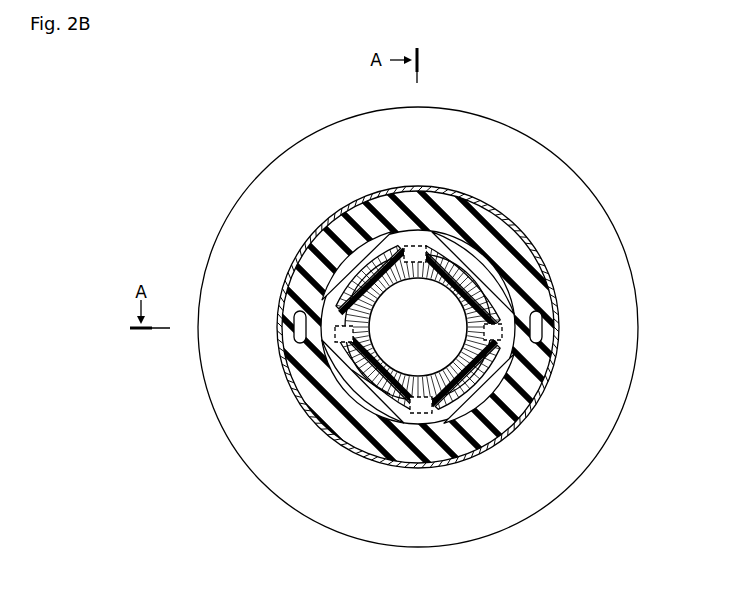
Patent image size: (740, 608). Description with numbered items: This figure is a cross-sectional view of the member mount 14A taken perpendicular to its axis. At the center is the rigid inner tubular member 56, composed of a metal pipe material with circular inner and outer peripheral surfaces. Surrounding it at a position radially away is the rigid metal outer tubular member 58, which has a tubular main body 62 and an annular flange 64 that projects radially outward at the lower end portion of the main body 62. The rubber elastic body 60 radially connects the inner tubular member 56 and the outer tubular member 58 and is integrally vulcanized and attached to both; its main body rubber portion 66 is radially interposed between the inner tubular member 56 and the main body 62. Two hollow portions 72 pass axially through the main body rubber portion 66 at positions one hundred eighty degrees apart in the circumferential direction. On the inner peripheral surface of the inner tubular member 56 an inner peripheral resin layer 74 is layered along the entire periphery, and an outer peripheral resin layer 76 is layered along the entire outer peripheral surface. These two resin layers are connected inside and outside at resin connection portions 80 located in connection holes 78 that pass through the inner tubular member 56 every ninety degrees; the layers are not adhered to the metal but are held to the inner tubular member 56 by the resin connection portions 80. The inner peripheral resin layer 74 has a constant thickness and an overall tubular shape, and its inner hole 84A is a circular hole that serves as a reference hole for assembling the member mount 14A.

The member mount 14A is at (589, 125).
The inner tubular member 56 is at (468, 262).
The outer tubular member 58 is at (553, 405).
The rubber elastic body 60 is at (520, 438).
The main body 62 is at (308, 240).
The flange 64 is at (613, 288).
The main body rubber portion 66 is at (502, 247).
The hollow portions 72 is at (295, 327).
The inner peripheral resin layer 74 is at (385, 283).
The outer peripheral resin layer 76 is at (507, 260).
The connection holes 78 is at (414, 248).
The resin connection portions 80 is at (410, 246).
The inner hole 84A is at (392, 362).